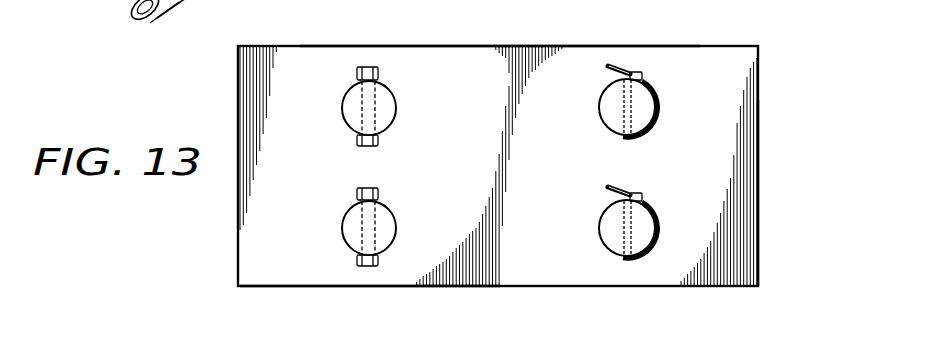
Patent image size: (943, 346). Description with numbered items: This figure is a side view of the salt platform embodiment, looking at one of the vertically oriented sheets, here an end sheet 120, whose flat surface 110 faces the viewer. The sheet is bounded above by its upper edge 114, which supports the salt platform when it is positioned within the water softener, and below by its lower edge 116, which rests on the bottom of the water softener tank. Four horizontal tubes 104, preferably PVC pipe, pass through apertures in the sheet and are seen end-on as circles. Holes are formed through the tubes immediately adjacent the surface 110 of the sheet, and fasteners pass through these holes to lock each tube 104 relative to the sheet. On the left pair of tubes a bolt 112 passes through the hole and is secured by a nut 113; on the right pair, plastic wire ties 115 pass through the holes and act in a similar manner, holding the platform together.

The horizontal tube 104 is at (346, 92).
The surface of the sheet 110 is at (574, 178).
The bolt 112 is at (378, 73).
The nut 113 is at (356, 138).
The upper edge 114 is at (591, 46).
The plastic wire tie 115 is at (642, 74).
The lower edge 116 is at (264, 288).
The end sheet 120 is at (759, 261).